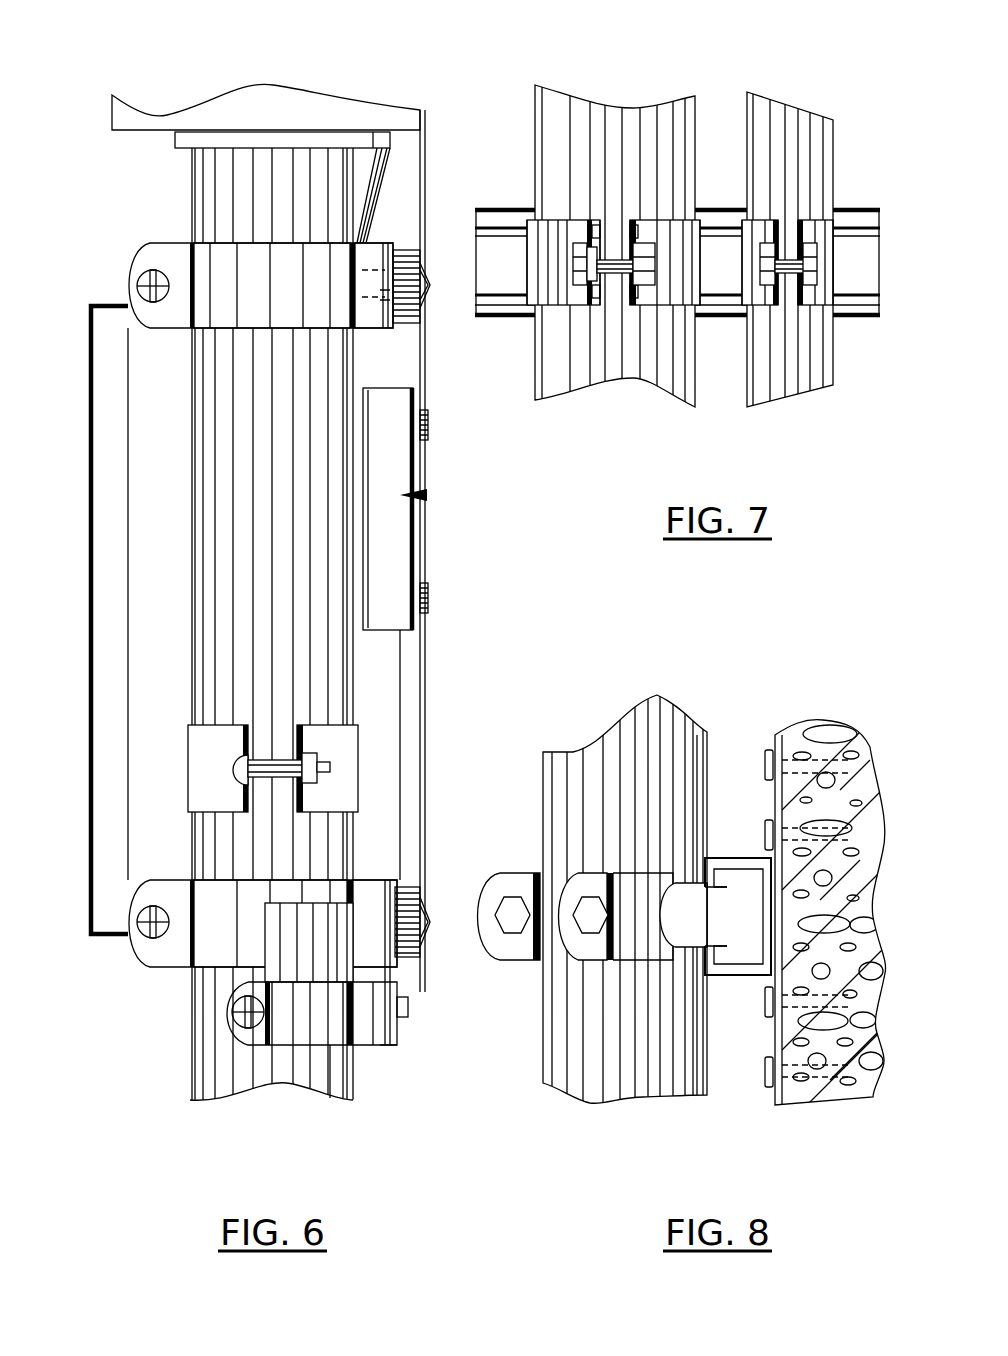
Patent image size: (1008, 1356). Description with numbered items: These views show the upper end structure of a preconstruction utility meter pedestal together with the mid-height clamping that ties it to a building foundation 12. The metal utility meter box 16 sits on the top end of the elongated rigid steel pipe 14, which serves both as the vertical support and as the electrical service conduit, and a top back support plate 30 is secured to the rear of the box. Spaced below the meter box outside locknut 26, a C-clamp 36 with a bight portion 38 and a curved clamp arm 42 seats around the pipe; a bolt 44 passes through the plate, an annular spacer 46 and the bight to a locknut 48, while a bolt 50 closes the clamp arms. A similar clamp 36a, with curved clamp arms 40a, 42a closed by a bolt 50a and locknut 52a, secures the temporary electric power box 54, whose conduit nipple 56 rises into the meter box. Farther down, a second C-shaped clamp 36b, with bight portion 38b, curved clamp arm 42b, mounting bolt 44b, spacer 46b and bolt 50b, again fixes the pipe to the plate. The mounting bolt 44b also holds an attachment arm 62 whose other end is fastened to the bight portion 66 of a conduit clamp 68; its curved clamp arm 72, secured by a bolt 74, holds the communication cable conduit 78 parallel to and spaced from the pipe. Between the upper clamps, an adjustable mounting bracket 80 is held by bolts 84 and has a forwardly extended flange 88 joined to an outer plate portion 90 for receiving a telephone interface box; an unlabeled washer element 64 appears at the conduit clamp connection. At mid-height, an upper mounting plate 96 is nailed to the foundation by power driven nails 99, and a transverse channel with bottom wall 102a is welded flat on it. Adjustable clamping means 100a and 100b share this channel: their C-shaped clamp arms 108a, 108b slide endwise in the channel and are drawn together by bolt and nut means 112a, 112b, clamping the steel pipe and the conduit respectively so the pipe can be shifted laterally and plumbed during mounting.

In FIG. 8, the building foundation 12 is at (830, 893).
In FIG. 6, the elongated vertical tubular support member 14 is at (246, 625).
In FIG. 7, the elongated vertical tubular support member 14 is at (615, 259).
In FIG. 8, the elongated vertical tubular support member 14 is at (602, 900).
In FIG. 6, the metal utility meter box 16 is at (237, 131).
In FIG. 6, the outside locknut 26 is at (222, 174).
In FIG. 6, the top back support plate 30 is at (470, 526).
In FIG. 7, the top back support plate 30 is at (677, 262).
In FIG. 6, the C-clamp 36 is at (210, 271).
In FIG. 6, the C-clamp 36a is at (416, 771).
In FIG. 6, the second C-shaped clamp 36b is at (212, 901).
In FIG. 6, the bight portion 38 is at (437, 231).
In FIG. 6, the bight portion 38b is at (413, 908).
In FIG. 6, the curved clamp arm 40a is at (190, 747).
In FIG. 6, the curved clamp arm 42 is at (245, 329).
In FIG. 6, the curved clamp arm 42a is at (388, 766).
In FIG. 6, the curved clamp arm 42b is at (232, 949).
In FIG. 6, the bolt 44 is at (459, 248).
In FIG. 6, the mounting bolt 44b is at (466, 944).
In FIG. 6, the annular spacer 46 is at (441, 318).
In FIG. 6, the annular spacer 46b is at (467, 969).
In FIG. 6, the locknut 48 is at (431, 353).
In FIG. 6, the bolt 50 is at (98, 290).
In FIG. 6, the bolt 50a is at (218, 801).
In FIG. 6, the bolt 50b is at (98, 949).
In FIG. 6, the locknut 52a is at (391, 784).
In FIG. 6, the temporary electric power box 54 is at (79, 620).
In FIG. 6, the conduit nipple 56 is at (441, 170).
In FIG. 6, the attachment arm 62 is at (463, 1037).
In FIG. 6, the washer 64 is at (451, 1048).
In FIG. 6, the bight portion 66 is at (455, 1095).
In FIG. 6, the conduit clamp 68 is at (248, 1031).
In FIG. 6, the curved clamp arm 72 is at (235, 1035).
In FIG. 6, the bolt 74 is at (180, 1022).
In FIG. 6, the communication cable conduit 78 is at (392, 1109).
In FIG. 7, the communication cable conduit 78 is at (790, 291).
In FIG. 8, the communication cable conduit 78 is at (637, 872).
In FIG. 6, the adjustable mounting bracket 80 is at (461, 497).
In FIG. 6, the bolts 84 is at (471, 524).
In FIG. 6, the forwardly extended flange 88 is at (443, 509).
In FIG. 6, the outer plate portion 90 is at (446, 754).
In FIG. 8, the upper mounting plate 96 is at (770, 797).
In FIG. 8, the power driven nails 99 is at (756, 885).
In FIG. 7, the adjustable clamping means 100a is at (593, 334).
In FIG. 8, the adjustable clamping means 100a is at (556, 888).
In FIG. 7, the adjustable clamping means 100b is at (800, 157).
In FIG. 8, the adjustable clamping means 100b is at (710, 865).
In FIG. 8, the bottom wall 102a is at (743, 953).
In FIG. 7, the clamp arms 108a is at (617, 172).
In FIG. 8, the clamp arms 108a is at (559, 1025).
In FIG. 7, the clamp arms 108b is at (769, 181).
In FIG. 8, the clamp arms 108b is at (717, 997).
In FIG. 7, the bolt and nut means 112a is at (655, 344).
In FIG. 8, the bolt and nut means 112a is at (485, 911).
In FIG. 7, the bolt and nut means 112b is at (821, 344).
In FIG. 8, the bolt and nut means 112b is at (650, 917).